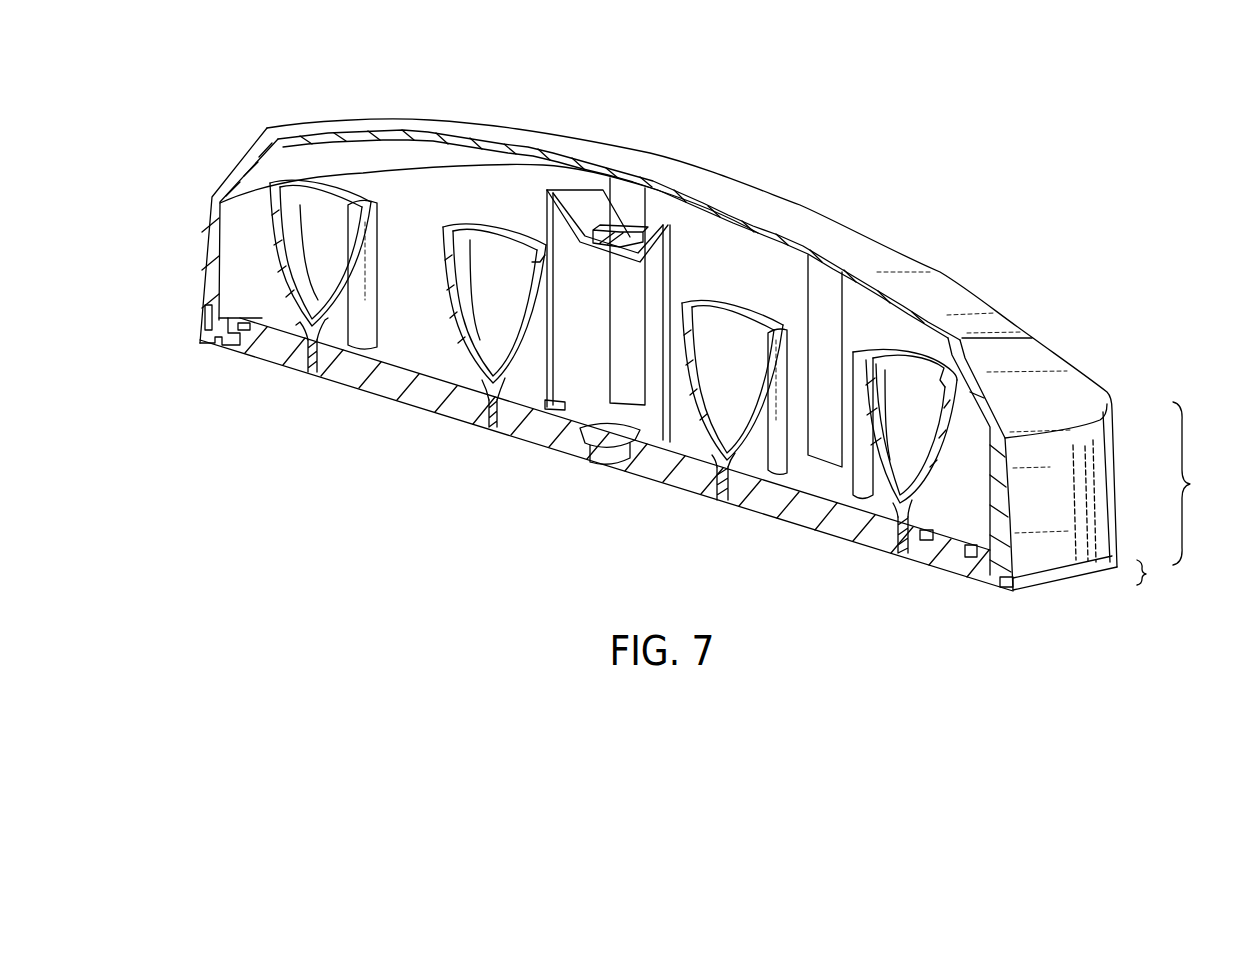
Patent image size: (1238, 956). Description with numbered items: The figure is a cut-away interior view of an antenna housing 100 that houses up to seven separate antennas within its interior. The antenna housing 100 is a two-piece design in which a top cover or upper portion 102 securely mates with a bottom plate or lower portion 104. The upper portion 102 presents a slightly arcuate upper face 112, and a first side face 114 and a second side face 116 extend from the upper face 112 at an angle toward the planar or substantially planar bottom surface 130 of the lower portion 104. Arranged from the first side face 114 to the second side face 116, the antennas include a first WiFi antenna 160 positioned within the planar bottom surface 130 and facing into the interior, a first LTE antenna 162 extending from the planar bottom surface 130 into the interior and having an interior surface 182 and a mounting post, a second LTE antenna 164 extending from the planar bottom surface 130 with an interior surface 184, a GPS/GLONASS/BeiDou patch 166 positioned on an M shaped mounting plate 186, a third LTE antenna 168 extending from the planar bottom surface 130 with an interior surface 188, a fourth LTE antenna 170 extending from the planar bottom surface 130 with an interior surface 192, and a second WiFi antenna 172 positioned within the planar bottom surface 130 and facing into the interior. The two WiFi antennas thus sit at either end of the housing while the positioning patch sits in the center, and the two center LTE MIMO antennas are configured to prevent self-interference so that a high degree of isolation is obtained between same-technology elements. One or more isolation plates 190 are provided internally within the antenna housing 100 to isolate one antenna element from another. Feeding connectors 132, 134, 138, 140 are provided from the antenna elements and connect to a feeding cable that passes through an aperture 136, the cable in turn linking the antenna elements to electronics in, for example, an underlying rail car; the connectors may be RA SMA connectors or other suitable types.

The antenna housing 100 is at (950, 140).
The upper portion 102 is at (1201, 483).
The lower portion 104 is at (1142, 573).
The upper face 112 is at (877, 253).
The first side face 114 is at (212, 207).
The second side face 116 is at (1052, 487).
The planar bottom surface 130 is at (955, 573).
The feeding connector 132 is at (309, 370).
The feeding connector 134 is at (495, 430).
The aperture 136 is at (600, 457).
The feeding connector 138 is at (722, 493).
The feeding connector 140 is at (905, 555).
The first WiFi antenna 160 is at (230, 345).
The first LTE antenna 162 is at (307, 296).
The second LTE antenna 164 is at (482, 342).
The GPS/GLONASS/BeiDou patch 166 is at (560, 403).
The third LTE antenna 168 is at (720, 413).
The fourth LTE antenna 170 is at (890, 460).
The second WiFi antenna 172 is at (975, 555).
The interior surface 182 is at (302, 215).
The interior surface 184 is at (467, 250).
The M shaped mounting plate 186 is at (587, 220).
The interior surface 188 is at (704, 323).
The isolation plate 190 is at (366, 253).
The interior surface 192 is at (920, 380).